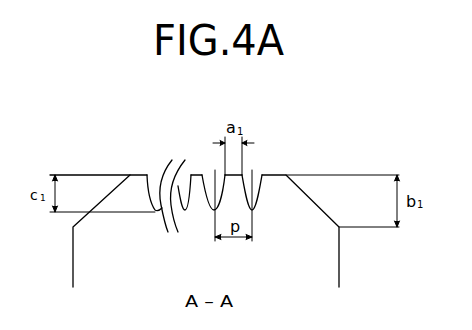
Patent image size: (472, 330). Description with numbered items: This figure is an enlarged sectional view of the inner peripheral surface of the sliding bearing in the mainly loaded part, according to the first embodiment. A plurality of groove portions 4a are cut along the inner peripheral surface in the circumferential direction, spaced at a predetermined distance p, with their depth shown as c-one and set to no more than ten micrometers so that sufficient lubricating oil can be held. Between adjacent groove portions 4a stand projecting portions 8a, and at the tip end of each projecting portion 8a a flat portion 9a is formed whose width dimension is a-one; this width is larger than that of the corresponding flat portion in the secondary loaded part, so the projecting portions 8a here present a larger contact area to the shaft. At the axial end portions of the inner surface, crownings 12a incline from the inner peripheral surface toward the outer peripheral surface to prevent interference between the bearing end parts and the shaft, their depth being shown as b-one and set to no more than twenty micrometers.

The crowning 12a is at (103, 199).
The projecting portion 8a is at (233, 174).
The flat portion 9a is at (226, 190).
The groove portion 4a is at (257, 174).